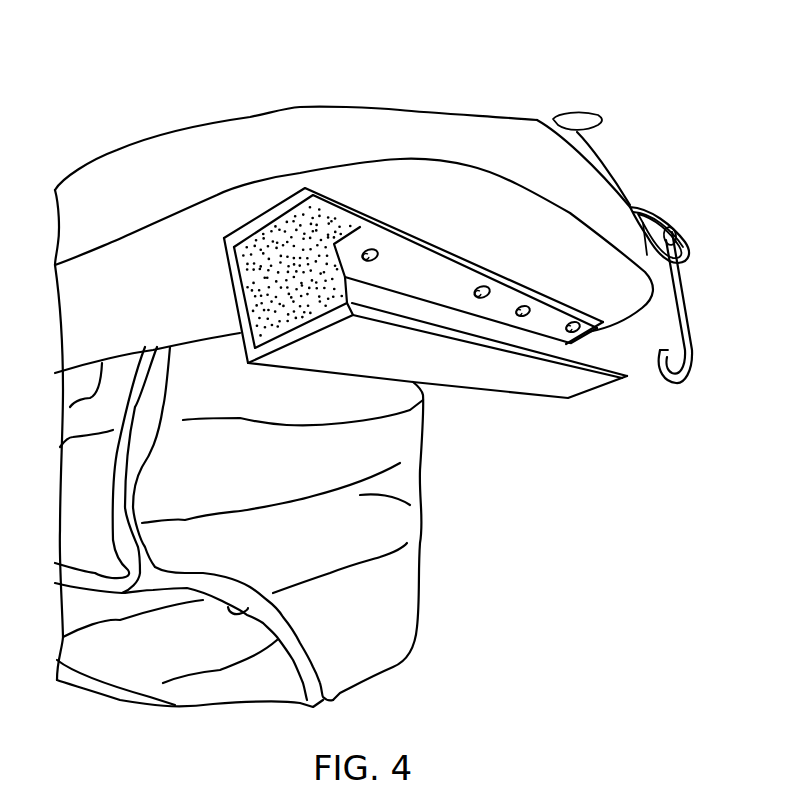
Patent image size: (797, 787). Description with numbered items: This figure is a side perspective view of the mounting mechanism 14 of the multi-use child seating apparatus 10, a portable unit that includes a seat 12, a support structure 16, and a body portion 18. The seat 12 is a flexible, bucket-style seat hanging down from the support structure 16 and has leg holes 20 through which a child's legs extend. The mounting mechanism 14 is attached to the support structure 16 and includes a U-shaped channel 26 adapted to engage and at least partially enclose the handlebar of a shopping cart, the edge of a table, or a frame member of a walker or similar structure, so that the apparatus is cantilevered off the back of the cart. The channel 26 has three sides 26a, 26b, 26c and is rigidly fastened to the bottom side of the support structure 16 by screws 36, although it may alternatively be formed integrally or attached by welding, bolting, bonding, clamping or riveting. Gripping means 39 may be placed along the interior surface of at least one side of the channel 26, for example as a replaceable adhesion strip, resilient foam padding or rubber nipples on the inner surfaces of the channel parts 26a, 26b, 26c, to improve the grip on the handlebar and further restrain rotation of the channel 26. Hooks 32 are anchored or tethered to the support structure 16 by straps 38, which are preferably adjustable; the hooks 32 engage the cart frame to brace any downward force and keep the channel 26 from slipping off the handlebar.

The multi-use child seating apparatus 10 is at (430, 103).
The seat 12 is at (301, 468).
The mounting mechanism 14 is at (704, 259).
The support structure 16 is at (542, 228).
The body portion 18 is at (592, 150).
The leg holes 20 is at (250, 610).
The U-shaped channel 26 is at (610, 378).
The channel side 26a is at (438, 265).
The channel side 26b is at (556, 350).
The channel side 26c is at (497, 377).
The hooks 32 is at (690, 336).
The screws 36 is at (378, 251).
The straps 38 is at (648, 216).
The gripping means 39 is at (247, 277).